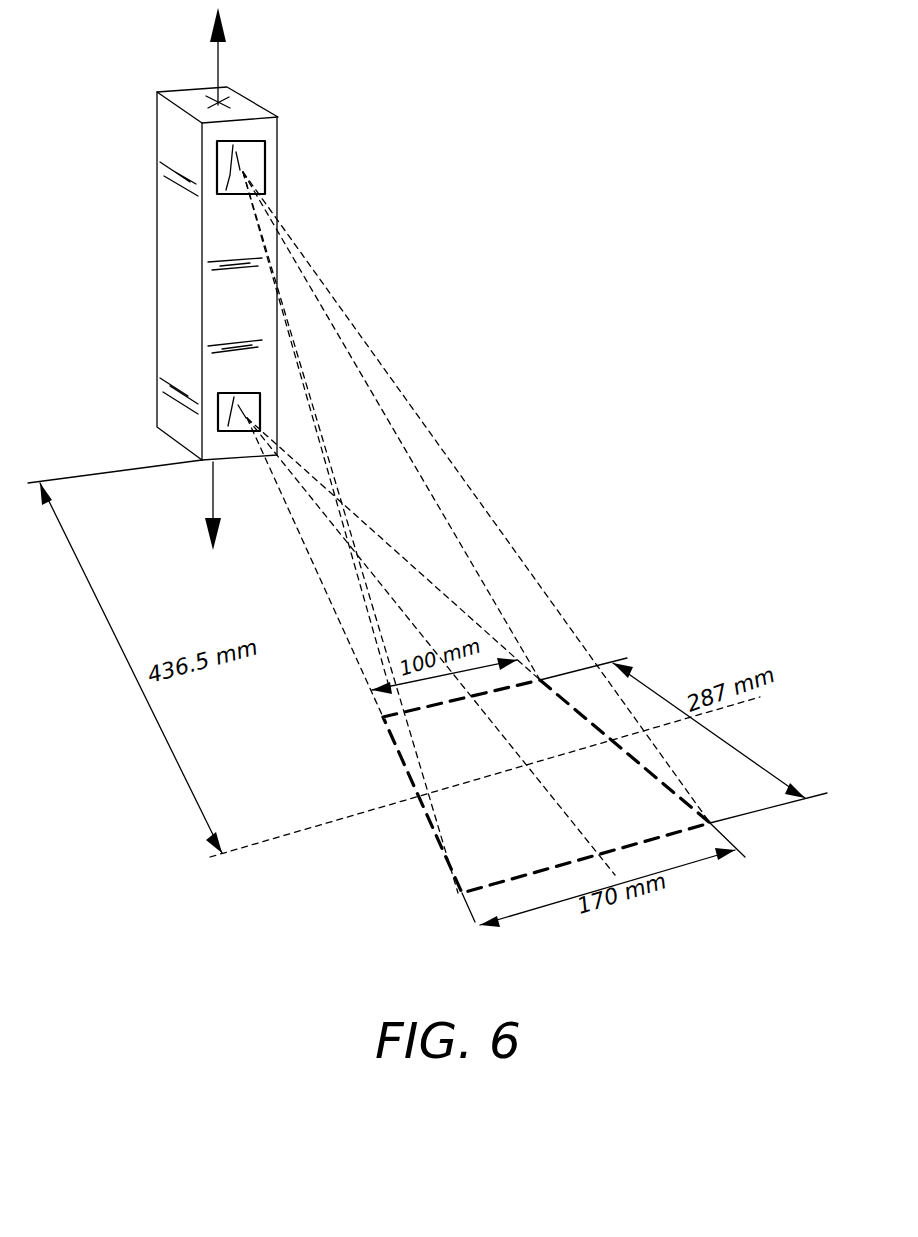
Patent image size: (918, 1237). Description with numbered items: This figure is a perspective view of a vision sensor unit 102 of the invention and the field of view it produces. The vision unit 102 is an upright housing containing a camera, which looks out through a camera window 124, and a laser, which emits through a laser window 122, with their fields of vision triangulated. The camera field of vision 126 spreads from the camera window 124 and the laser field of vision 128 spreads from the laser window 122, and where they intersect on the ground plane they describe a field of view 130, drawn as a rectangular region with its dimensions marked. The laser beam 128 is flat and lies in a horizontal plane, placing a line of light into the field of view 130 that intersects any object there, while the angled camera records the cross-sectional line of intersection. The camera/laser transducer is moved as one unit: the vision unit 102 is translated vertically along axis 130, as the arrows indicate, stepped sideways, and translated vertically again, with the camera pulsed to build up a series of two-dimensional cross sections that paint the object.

The vision sensor unit 102 is at (257, 250).
The laser window 122 is at (218, 392).
The camera window 124 is at (222, 168).
The camera field of vision 126 is at (445, 462).
The laser field of vision 128 is at (320, 560).
The field of view 130 is at (218, 78).